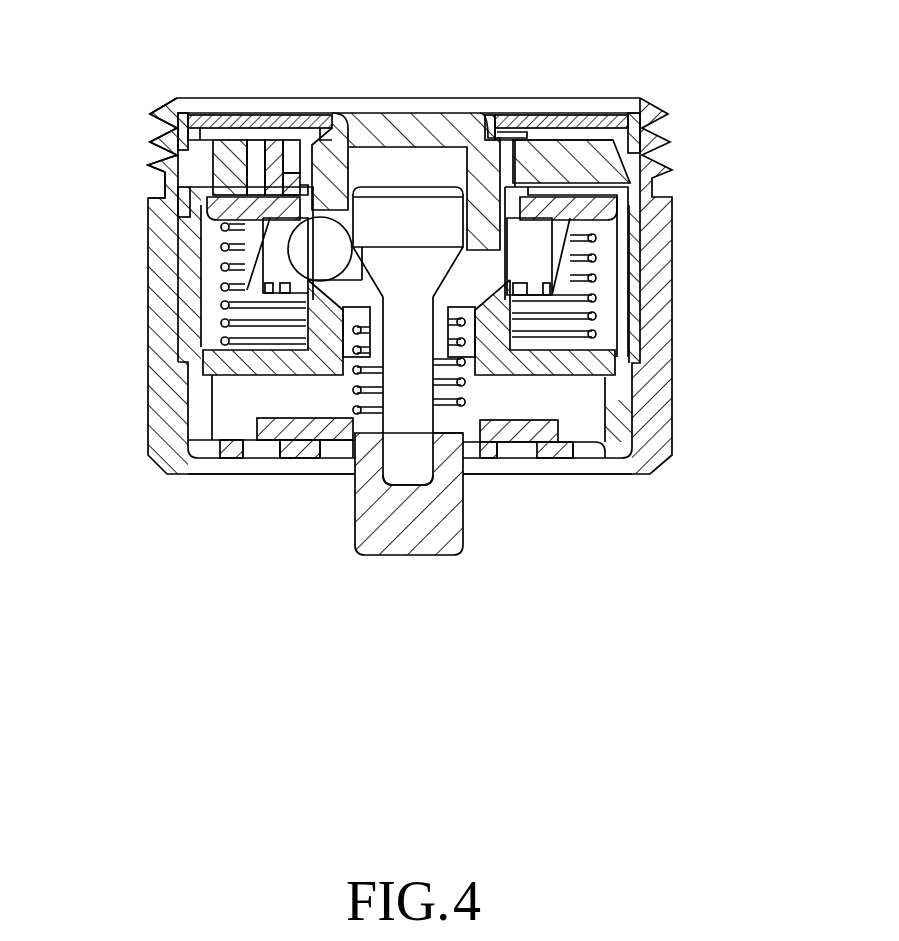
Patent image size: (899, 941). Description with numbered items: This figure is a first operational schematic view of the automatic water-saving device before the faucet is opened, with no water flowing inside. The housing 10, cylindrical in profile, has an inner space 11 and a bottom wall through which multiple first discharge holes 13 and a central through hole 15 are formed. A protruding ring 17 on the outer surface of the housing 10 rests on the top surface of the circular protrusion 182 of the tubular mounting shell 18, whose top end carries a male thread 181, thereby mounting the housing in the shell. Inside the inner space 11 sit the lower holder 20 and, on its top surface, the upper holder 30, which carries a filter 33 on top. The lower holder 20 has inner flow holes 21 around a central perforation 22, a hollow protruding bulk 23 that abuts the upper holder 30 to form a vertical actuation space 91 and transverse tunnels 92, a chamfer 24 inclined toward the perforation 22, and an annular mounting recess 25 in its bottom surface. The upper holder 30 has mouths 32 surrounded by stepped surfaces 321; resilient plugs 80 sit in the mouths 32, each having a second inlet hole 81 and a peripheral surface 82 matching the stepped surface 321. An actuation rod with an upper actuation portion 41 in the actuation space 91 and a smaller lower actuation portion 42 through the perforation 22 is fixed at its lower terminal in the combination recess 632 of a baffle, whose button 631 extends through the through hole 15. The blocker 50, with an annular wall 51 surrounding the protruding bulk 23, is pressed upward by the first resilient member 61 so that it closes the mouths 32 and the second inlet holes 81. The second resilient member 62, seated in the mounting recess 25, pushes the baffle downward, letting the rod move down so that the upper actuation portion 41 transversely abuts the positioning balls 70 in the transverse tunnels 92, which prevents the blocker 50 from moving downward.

The housing 10 is at (620, 458).
The inner space 11 is at (603, 393).
The first discharge holes 13 is at (590, 460).
The through hole 15 is at (523, 460).
The protruding ring 17 is at (632, 365).
The mounting shell 18 is at (155, 257).
The male thread 181 is at (152, 128).
The circular protrusion 182 is at (186, 364).
The lower holder 20 is at (297, 367).
The inner flow holes 21 is at (250, 368).
The perforation 22 is at (375, 376).
The protruding bulk 23 is at (230, 395).
The chamfer 24 is at (177, 227).
The mounting recess 25 is at (470, 352).
The upper holder 30 is at (600, 165).
The mouths 32 is at (295, 115).
The stepped surfaces 321 is at (184, 186).
The filter 33 is at (617, 115).
The upper actuation portion 41 is at (438, 195).
The lower actuation portion 42 is at (383, 440).
The blocker 50 is at (603, 208).
The annular wall 51 is at (563, 245).
The first resilient member 61 is at (565, 312).
The second resilient member 62 is at (447, 455).
The button 631 is at (440, 552).
The combination recess 632 is at (440, 480).
The positioning balls 70 is at (296, 253).
The plugs 80 is at (275, 115).
The second inlet hole 81 is at (222, 140).
The peripheral surface 82 is at (165, 169).
The actuation space 91 is at (375, 115).
The transverse tunnels 92 is at (350, 115).